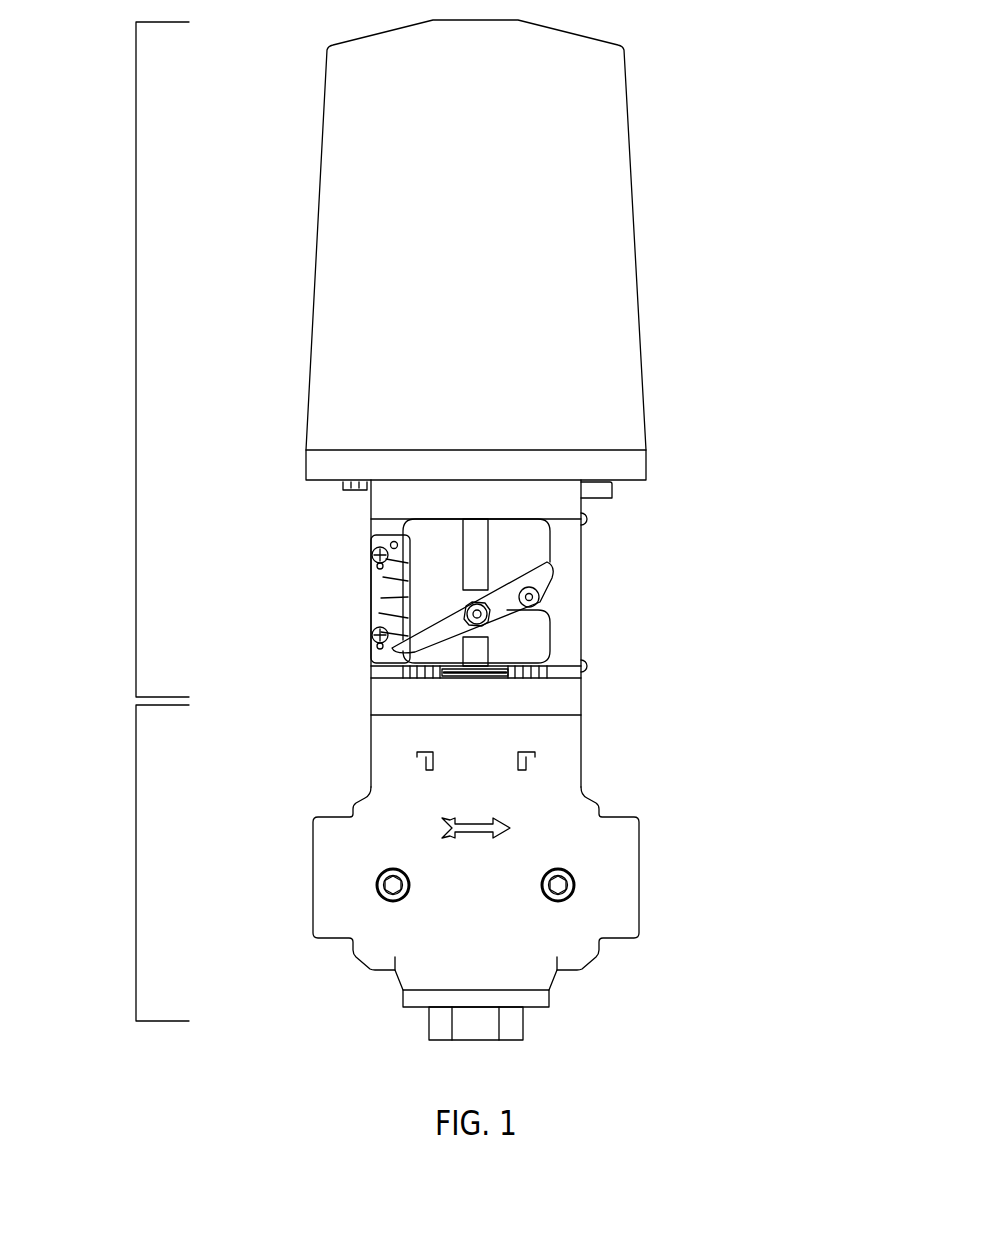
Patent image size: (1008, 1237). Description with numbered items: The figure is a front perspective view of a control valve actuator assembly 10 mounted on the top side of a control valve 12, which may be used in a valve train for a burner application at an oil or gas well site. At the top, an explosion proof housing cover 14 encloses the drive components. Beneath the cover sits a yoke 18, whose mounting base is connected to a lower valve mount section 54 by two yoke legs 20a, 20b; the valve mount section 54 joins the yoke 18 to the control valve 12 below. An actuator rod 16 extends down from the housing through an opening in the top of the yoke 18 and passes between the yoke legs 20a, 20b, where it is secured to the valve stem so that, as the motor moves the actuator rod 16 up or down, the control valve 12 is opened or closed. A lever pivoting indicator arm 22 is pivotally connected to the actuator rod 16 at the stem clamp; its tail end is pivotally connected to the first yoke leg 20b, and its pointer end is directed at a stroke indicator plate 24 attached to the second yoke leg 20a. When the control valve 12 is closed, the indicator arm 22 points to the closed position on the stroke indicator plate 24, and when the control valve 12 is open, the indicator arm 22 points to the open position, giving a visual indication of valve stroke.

The control valve actuator assembly 10 is at (136, 340).
The control valve 12 is at (136, 853).
The explosion proof housing cover 14 is at (560, 202).
The actuator rod 16 is at (480, 558).
The yoke 18 is at (539, 503).
The second yoke leg 20a is at (372, 602).
The first yoke leg 20b is at (573, 598).
The lever pivoting indicator arm 22 is at (450, 617).
The stroke indicator plate 24 is at (377, 612).
The valve mount section 54 is at (557, 702).